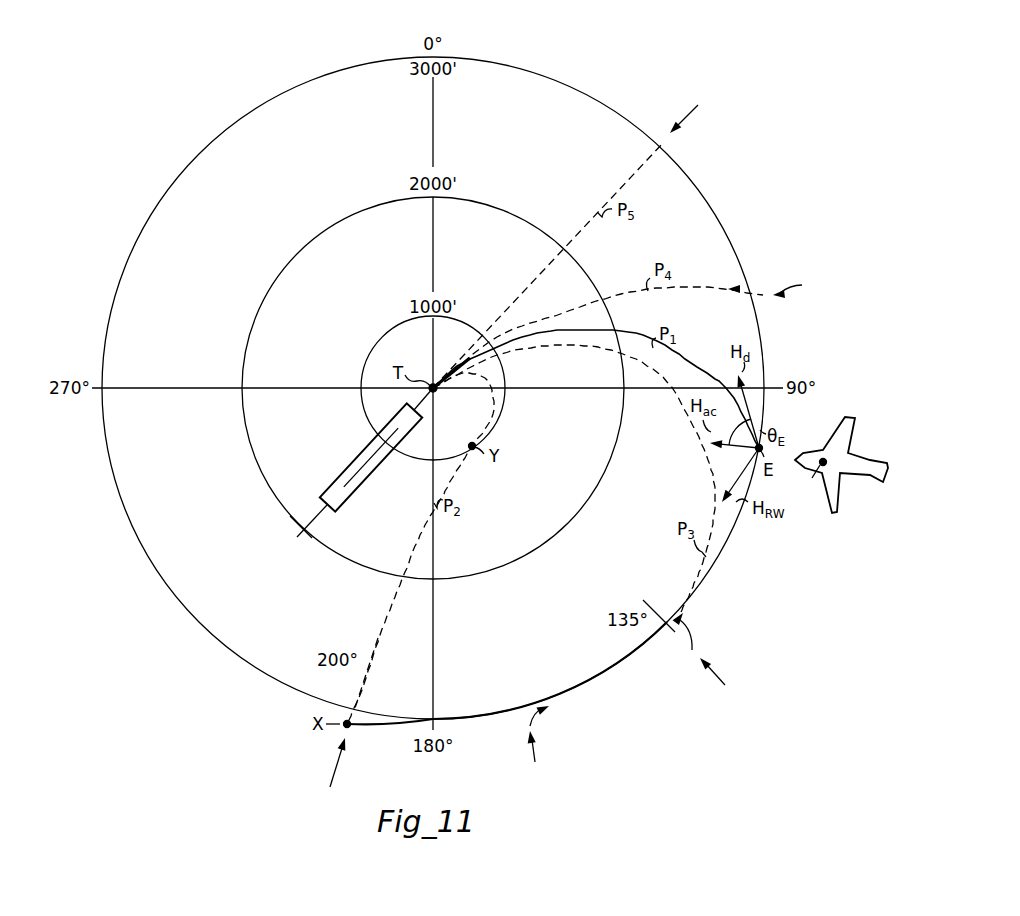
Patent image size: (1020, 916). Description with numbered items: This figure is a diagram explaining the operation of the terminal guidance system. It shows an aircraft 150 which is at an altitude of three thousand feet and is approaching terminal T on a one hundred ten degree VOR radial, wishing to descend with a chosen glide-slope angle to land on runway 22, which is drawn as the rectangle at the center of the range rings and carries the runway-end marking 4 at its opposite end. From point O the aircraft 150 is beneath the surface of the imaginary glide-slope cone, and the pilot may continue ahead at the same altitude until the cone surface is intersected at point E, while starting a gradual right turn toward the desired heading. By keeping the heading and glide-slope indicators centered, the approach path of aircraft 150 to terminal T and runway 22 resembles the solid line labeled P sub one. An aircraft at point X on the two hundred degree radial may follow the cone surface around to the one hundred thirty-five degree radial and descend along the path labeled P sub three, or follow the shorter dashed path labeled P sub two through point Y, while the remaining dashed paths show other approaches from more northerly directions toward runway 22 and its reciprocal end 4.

The aircraft 150 is at (852, 475).
The runway 22 is at (365, 462).
The runway end 4 is at (338, 493).